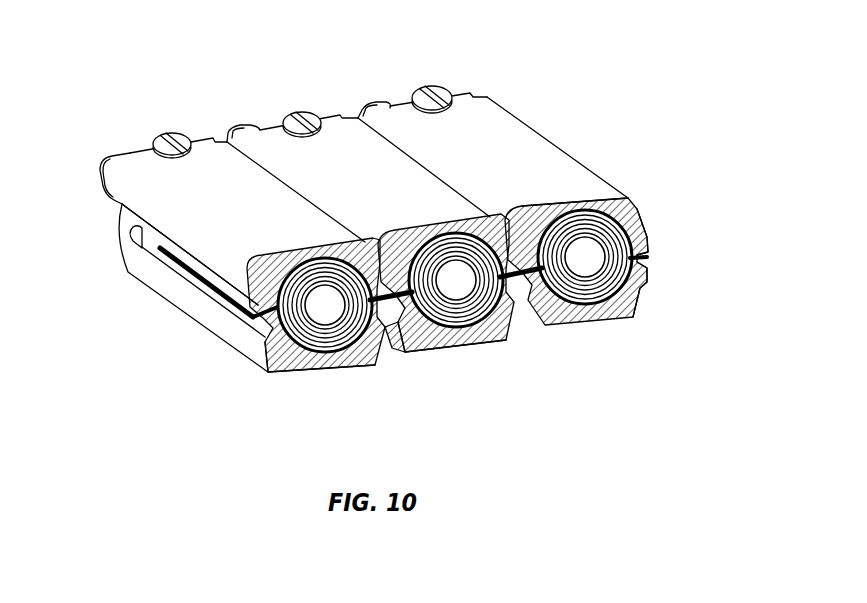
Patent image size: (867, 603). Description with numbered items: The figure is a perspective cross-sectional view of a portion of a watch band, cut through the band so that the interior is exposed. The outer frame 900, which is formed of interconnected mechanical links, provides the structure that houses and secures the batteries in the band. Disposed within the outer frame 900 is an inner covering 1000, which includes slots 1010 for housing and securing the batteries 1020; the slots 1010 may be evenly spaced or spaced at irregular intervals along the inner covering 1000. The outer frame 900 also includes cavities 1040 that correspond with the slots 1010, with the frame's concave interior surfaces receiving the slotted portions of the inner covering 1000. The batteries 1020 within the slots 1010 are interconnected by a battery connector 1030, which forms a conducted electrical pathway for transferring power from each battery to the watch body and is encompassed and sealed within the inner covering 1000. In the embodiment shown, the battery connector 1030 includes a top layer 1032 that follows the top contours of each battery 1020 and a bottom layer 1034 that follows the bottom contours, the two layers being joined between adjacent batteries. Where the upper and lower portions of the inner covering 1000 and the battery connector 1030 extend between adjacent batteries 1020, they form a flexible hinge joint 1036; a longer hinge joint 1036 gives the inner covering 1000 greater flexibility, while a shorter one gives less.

The outer frame 900 is at (120, 105).
The inner covering 1000 is at (549, 207).
The slots 1010 is at (308, 370).
The batteries 1020 is at (262, 368).
The battery connector 1030 is at (648, 249).
The top layer 1032 is at (618, 197).
The bottom layer 1034 is at (643, 287).
The flexible hinge joint 1036 is at (383, 318).
The cavities 1040 is at (455, 343).